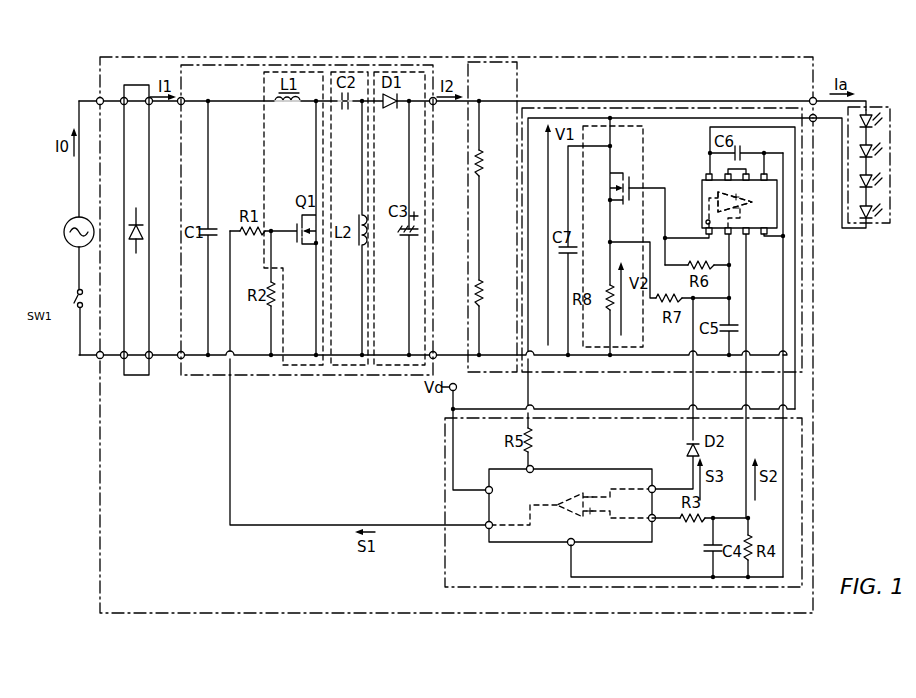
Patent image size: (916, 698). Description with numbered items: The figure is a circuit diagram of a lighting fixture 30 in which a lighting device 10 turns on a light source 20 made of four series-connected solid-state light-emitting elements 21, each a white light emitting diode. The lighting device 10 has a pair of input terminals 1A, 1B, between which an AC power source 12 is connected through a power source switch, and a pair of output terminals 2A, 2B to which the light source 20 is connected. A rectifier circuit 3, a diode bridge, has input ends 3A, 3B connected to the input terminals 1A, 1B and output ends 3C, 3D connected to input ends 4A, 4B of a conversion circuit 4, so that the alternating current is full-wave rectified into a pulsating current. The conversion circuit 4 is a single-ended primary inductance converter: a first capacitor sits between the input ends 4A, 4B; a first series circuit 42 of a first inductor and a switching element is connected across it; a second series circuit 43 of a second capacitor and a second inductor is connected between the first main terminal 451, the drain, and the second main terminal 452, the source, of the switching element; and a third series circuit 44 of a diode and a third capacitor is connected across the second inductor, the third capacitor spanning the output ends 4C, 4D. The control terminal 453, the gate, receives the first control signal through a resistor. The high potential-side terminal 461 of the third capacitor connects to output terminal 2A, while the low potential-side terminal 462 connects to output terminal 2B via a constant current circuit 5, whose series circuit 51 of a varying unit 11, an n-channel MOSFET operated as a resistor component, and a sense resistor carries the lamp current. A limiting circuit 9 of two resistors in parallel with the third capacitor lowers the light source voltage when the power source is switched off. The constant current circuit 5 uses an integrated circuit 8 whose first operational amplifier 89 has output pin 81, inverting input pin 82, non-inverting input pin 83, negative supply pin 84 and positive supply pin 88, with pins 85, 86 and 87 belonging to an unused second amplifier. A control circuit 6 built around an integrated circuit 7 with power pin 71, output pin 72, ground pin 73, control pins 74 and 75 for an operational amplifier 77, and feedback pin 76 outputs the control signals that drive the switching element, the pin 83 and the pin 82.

The input terminal 1A is at (98, 99).
The input terminal 1B is at (99, 359).
The first output terminal 2A is at (811, 98).
The second output terminal 2B is at (815, 121).
The rectifier circuit 3 is at (140, 85).
The input end 3A is at (123, 105).
The input end 3B is at (123, 352).
The output end 3C is at (151, 105).
The output end 3D is at (151, 352).
The conversion circuit 4 is at (433, 65).
The input end 4A is at (183, 105).
The input end 4B is at (183, 352).
The output end 4C is at (435, 105).
The output end 4D is at (436, 352).
The first series circuit 42 is at (270, 72).
The second series circuit 43 is at (360, 72).
The third series circuit 44 is at (403, 72).
The first main terminal 451 is at (314, 104).
The second main terminal 452 is at (316, 352).
The control terminal 453 is at (272, 235).
The high potential-side terminal 461 is at (409, 105).
The low potential-side terminal 462 is at (408, 352).
The constant current circuit 5 is at (620, 108).
The series circuit 51 is at (645, 128).
The varying unit 11 is at (616, 173).
The control circuit 6 is at (445, 468).
The integrated circuit 7 is at (573, 502).
The first connection pin 71 is at (486, 487).
The second connection pin 72 is at (486, 528).
The third connection pin 73 is at (569, 546).
The fourth connection pin 74 is at (655, 521).
The fifth connection pin 75 is at (654, 486).
The sixth connection pin 76 is at (533, 467).
The operational amplifier 77 is at (567, 511).
The integrated circuit 8 is at (702, 204).
The first connection pin 81 is at (706, 232).
The second connection pin 82 is at (727, 236).
The third connection pin 83 is at (748, 236).
The fourth connection pin 84 is at (785, 236).
The fifth connection pin 85 is at (769, 172).
The sixth connection pin 86 is at (748, 174).
The seventh connection pin 87 is at (726, 174).
The eighth connection pin 88 is at (706, 177).
The first operational amplifier 89 is at (748, 199).
The limiting circuit 9 is at (493, 62).
The lighting device 10 is at (765, 57).
The AC power source 12 is at (73, 217).
The light source 20 is at (858, 162).
The solid-state light-emitting element 21 is at (870, 222).
The lighting fixture 30 is at (821, 46).